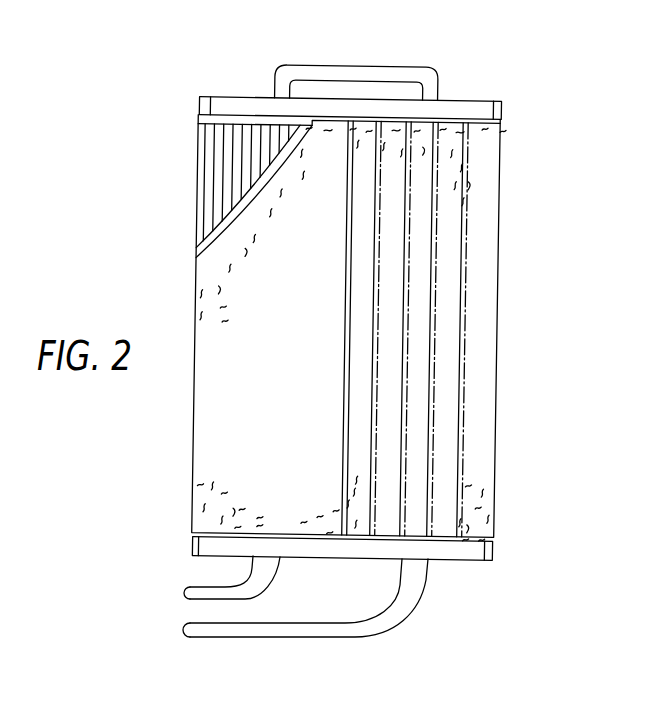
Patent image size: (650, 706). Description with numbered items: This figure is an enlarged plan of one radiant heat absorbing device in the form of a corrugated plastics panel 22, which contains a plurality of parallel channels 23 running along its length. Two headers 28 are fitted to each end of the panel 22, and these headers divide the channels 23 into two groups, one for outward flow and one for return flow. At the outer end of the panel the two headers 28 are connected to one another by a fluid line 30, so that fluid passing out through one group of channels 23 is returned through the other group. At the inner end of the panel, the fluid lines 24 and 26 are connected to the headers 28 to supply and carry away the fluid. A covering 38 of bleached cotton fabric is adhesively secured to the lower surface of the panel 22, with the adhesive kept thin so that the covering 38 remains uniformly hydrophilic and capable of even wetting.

The corrugated plastics panel 22 is at (200, 255).
The parallel channels 23 is at (213, 162).
The fluid line 24 is at (313, 633).
The fluid line 26 is at (195, 596).
The header 28 is at (221, 98).
The fluid line 30 is at (365, 72).
The covering of bleached cotton fabric 38 is at (478, 288).